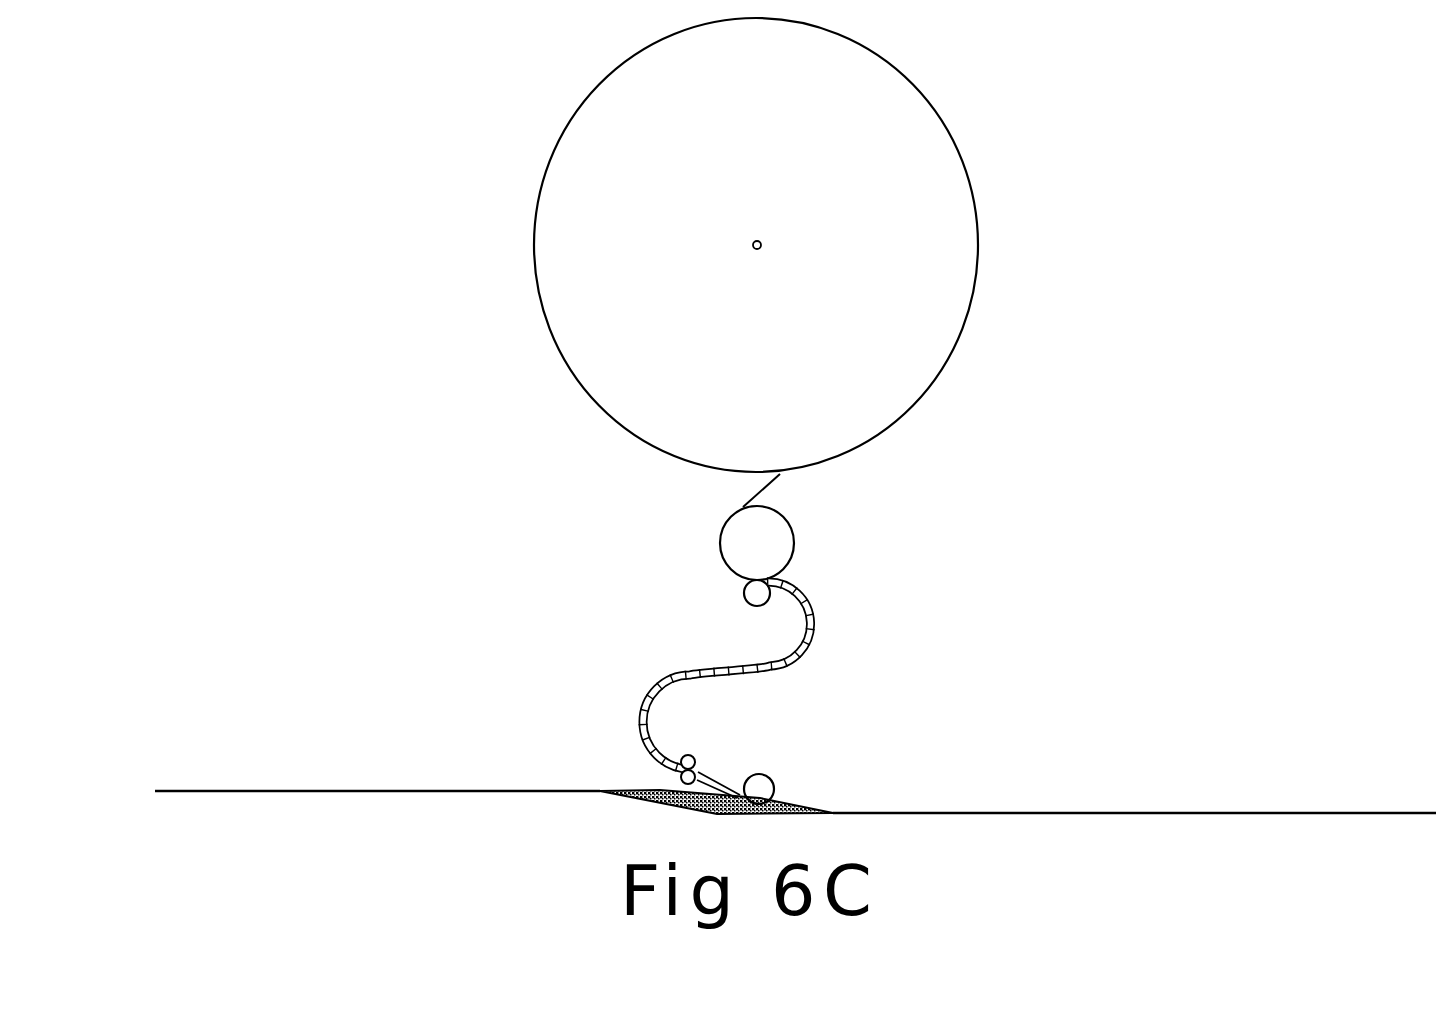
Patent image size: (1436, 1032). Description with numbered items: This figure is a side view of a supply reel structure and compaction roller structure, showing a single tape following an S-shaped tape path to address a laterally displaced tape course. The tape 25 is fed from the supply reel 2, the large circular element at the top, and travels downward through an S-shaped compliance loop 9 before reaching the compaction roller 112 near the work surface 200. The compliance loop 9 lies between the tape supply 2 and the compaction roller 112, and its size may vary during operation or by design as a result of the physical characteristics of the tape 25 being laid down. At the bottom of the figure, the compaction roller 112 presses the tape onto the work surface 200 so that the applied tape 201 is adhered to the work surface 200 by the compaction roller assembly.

The supply reel 2 is at (977, 209).
The tape 25 is at (770, 485).
The S-shaped compliance loop 9 is at (783, 668).
The compaction roller 112 is at (776, 782).
The work surface 200 is at (490, 790).
The applied tape 201 is at (657, 788).